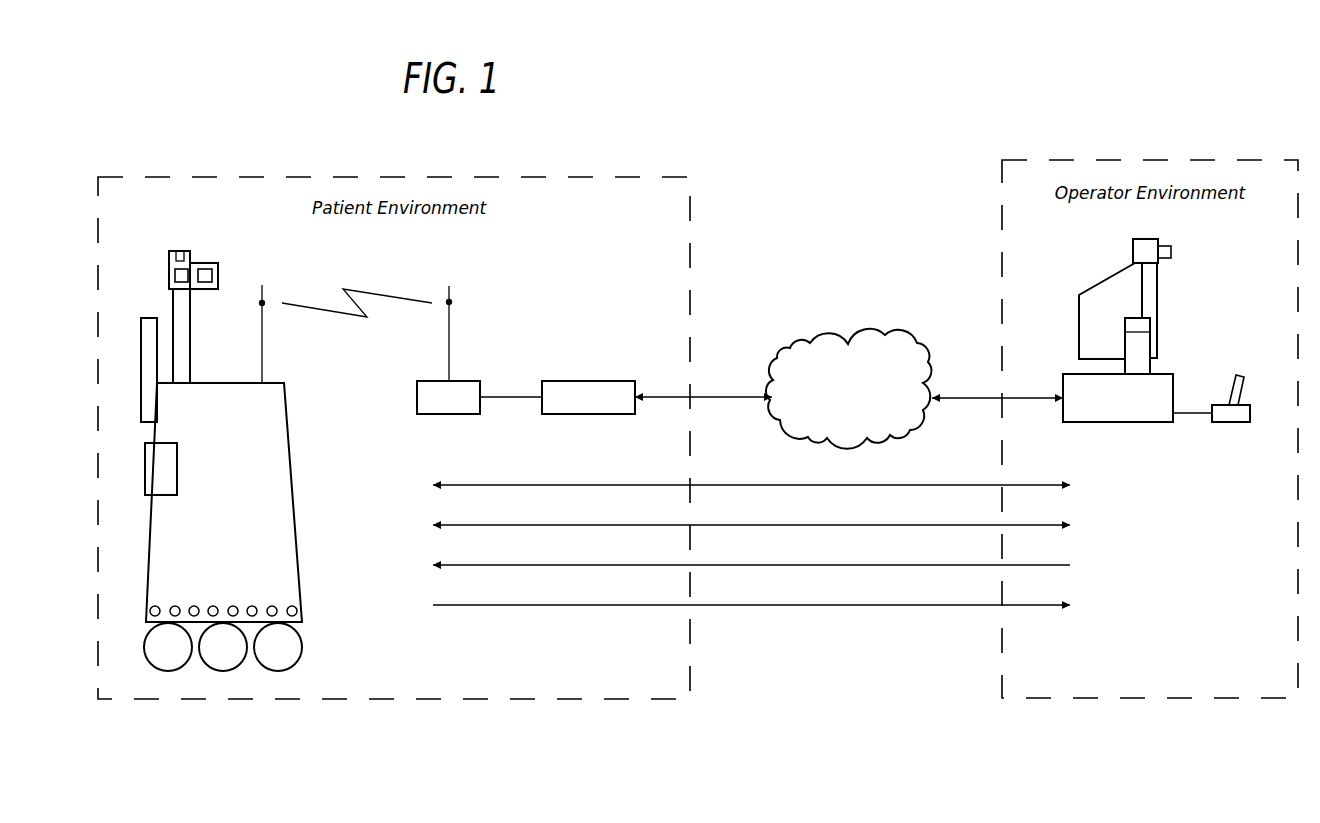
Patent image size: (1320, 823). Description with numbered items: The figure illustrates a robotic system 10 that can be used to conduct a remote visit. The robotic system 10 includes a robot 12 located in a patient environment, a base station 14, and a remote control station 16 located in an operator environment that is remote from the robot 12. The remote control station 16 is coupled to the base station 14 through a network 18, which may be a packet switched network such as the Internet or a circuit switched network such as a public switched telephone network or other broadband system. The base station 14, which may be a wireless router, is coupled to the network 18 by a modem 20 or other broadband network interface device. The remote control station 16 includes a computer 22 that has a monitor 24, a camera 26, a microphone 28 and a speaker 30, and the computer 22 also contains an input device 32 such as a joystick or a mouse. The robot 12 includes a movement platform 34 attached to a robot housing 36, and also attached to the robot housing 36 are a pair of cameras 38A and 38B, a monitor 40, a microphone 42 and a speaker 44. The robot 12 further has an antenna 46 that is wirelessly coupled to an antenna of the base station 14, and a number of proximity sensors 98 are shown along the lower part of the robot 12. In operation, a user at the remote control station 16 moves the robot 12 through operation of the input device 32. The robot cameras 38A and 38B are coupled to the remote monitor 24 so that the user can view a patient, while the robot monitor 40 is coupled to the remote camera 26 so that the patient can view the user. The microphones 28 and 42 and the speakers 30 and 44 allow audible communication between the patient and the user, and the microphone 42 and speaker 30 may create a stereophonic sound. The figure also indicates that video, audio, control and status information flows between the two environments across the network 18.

The robotic system 10 is at (748, 440).
The robot 12 is at (268, 434).
The base station 14 is at (462, 381).
The remote control station 16 is at (1086, 332).
The network 18 is at (848, 389).
The modem 20 is at (588, 381).
The computer 22 is at (1150, 415).
The monitor 24 is at (1152, 288).
The camera 26 is at (1140, 249).
The microphone 28 is at (1135, 323).
The speaker 30 is at (1145, 368).
The input device 32 is at (1240, 413).
The movement platform 34 is at (283, 654).
The robot housing 36 is at (182, 583).
The camera 38A is at (175, 277).
The camera 38B is at (218, 272).
The monitor 40 is at (148, 360).
The microphone 42 is at (182, 260).
The speaker 44 is at (157, 473).
The antenna 46 is at (262, 290).
The proximity sensors 98 is at (147, 605).